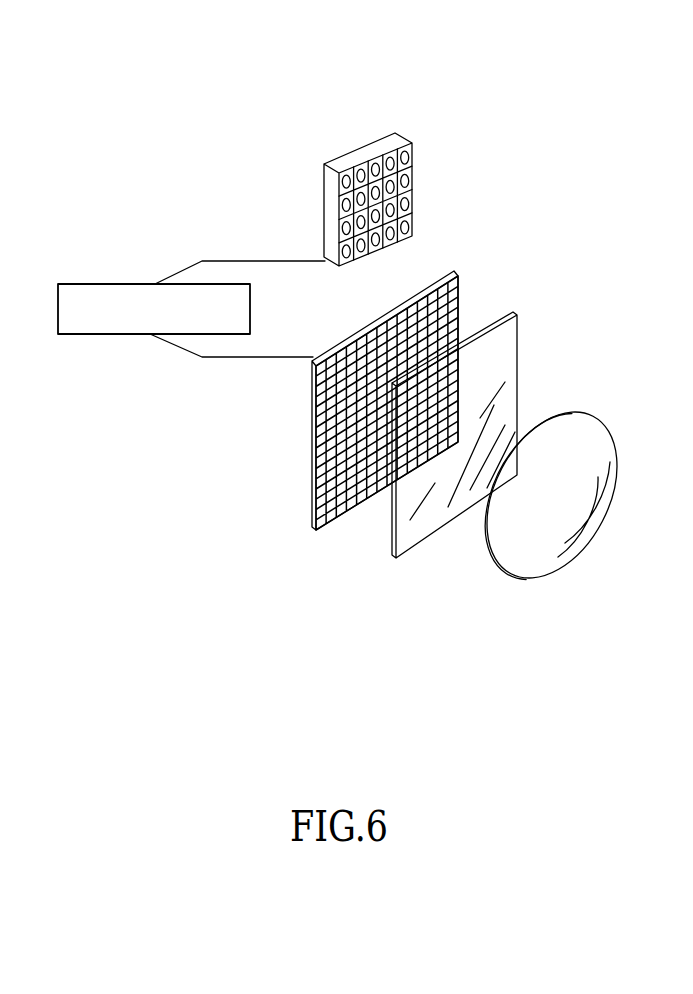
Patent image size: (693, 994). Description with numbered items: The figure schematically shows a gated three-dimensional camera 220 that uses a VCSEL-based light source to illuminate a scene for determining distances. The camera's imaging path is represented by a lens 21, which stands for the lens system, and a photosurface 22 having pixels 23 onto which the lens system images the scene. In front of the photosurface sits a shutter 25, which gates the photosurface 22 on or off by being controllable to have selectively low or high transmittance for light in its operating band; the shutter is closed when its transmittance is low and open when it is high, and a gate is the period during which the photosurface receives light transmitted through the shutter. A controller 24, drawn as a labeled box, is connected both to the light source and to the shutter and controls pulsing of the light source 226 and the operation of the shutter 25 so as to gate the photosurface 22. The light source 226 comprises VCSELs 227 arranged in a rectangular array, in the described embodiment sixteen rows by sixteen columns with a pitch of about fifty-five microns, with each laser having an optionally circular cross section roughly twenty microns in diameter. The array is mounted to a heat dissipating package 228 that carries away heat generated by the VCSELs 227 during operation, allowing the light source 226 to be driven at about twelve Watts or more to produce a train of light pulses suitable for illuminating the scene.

The gated 3D camera 220 is at (185, 588).
The photosurface 22 is at (287, 467).
The pixels 23 is at (330, 443).
The shutter 25 is at (392, 532).
The lens 21 is at (517, 588).
The controller 24 is at (120, 284).
The light source 226 is at (403, 118).
The VCSELs 227 is at (405, 205).
The heat dissipating package 228 is at (328, 222).